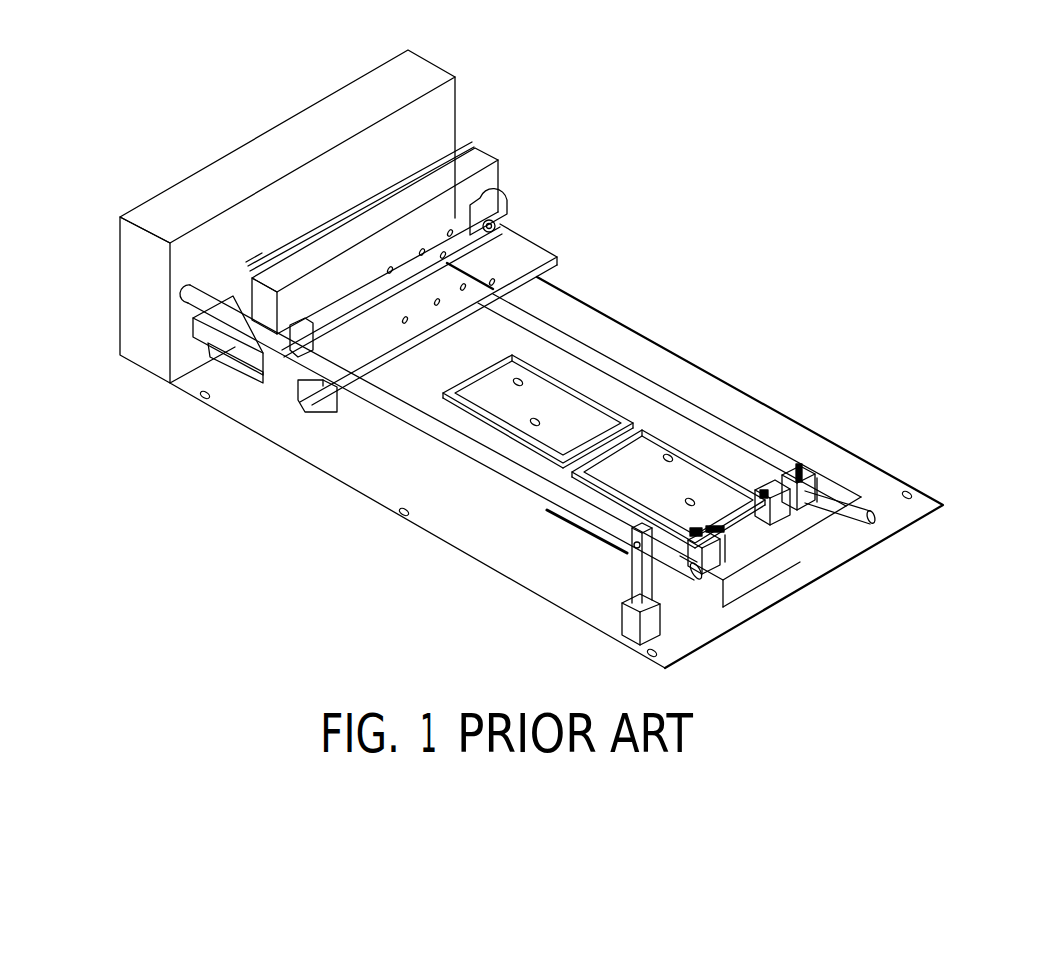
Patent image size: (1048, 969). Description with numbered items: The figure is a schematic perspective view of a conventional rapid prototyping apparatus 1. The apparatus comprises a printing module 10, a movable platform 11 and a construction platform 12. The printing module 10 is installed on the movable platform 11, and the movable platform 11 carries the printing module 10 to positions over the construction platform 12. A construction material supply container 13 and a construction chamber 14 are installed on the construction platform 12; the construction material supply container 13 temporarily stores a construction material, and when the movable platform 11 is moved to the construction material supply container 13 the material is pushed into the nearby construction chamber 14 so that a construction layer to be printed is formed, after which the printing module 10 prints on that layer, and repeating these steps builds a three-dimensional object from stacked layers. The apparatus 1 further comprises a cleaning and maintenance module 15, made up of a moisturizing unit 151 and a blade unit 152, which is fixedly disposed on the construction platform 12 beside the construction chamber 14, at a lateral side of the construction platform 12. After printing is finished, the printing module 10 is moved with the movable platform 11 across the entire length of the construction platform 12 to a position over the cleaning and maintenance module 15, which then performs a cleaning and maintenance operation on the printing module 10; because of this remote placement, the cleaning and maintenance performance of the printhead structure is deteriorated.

The rapid prototyping apparatus 1 is at (1017, 77).
The printing module 10 is at (513, 167).
The movable platform 11 is at (538, 232).
The construction platform 12 is at (626, 397).
The construction material supply container 13 is at (541, 403).
The construction chamber 14 is at (678, 480).
The cleaning and maintenance module 15 is at (858, 523).
The moisturizing unit 151 is at (811, 480).
The blade unit 152 is at (730, 555).